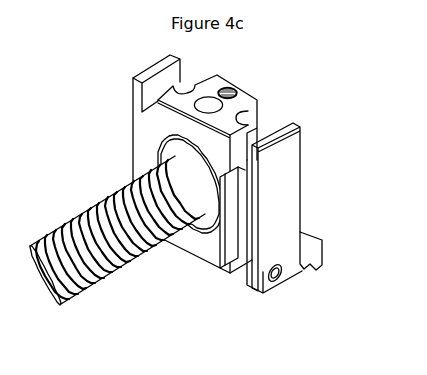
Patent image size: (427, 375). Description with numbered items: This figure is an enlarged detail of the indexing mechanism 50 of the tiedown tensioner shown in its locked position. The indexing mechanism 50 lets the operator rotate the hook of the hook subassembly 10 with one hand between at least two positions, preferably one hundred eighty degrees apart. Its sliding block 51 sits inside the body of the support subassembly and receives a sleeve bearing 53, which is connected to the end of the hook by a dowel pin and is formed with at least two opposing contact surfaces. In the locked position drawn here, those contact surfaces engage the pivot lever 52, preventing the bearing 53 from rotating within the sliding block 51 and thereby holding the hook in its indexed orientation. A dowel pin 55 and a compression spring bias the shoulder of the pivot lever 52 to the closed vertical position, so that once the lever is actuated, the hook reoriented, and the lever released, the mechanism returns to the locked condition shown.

The hook subassembly 10 is at (102, 292).
The indexing mechanism 50 is at (250, 89).
The sliding block 51 is at (280, 162).
The pivot lever 52 is at (227, 267).
The sleeve bearing 53 is at (151, 132).
The dowel pin 55 is at (283, 266).